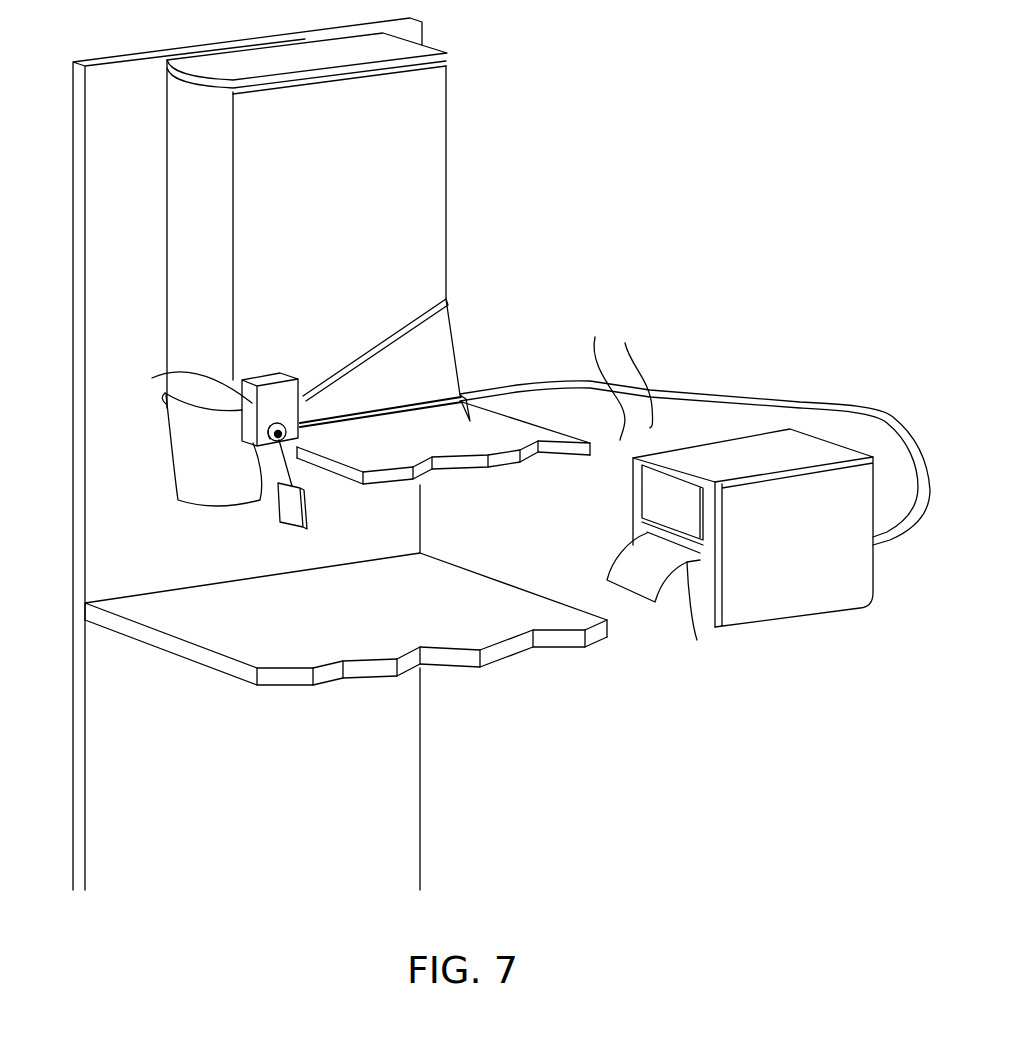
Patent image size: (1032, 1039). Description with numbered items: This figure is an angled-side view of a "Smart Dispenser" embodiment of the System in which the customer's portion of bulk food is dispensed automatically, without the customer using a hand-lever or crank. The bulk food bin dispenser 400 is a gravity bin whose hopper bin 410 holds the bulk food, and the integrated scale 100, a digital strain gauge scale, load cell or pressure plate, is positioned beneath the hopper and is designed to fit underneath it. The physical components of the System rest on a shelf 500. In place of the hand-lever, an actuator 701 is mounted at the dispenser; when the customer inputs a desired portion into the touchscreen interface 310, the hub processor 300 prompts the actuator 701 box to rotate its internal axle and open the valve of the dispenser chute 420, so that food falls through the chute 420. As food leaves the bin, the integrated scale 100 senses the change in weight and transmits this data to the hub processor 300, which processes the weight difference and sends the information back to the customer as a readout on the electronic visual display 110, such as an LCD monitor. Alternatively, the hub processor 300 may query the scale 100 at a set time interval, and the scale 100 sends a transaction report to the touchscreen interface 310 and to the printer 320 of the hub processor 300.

The bulk food bin dispenser 400 is at (490, 66).
The hopper bin 410 is at (408, 167).
The integrated scale 100 is at (472, 326).
The actuator 701 is at (153, 378).
The chute 420 is at (200, 506).
The electronic visual display 110 is at (280, 512).
The shelf 500 is at (460, 471).
The hub processor 300 is at (703, 587).
The touchscreen interface 310 is at (678, 494).
The printer 320 is at (697, 640).